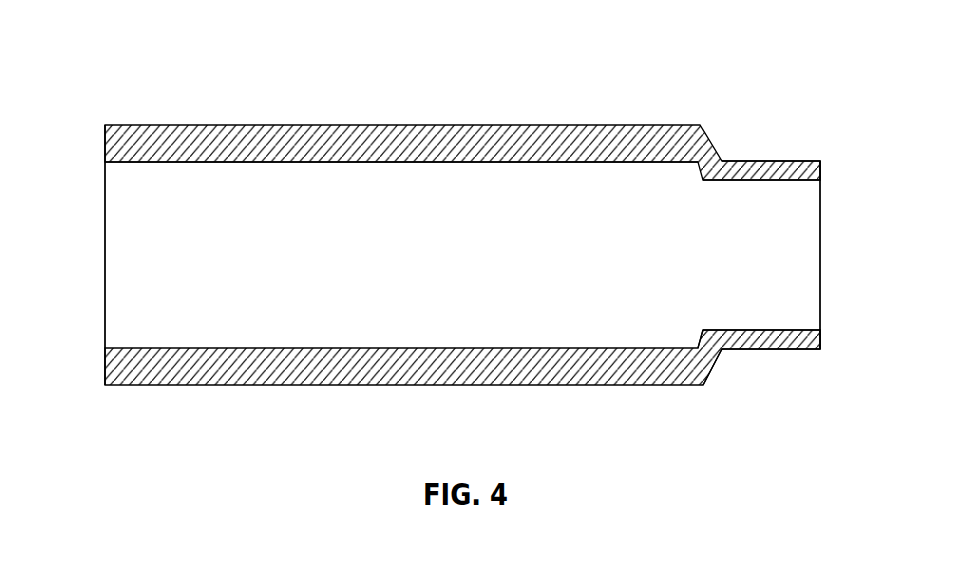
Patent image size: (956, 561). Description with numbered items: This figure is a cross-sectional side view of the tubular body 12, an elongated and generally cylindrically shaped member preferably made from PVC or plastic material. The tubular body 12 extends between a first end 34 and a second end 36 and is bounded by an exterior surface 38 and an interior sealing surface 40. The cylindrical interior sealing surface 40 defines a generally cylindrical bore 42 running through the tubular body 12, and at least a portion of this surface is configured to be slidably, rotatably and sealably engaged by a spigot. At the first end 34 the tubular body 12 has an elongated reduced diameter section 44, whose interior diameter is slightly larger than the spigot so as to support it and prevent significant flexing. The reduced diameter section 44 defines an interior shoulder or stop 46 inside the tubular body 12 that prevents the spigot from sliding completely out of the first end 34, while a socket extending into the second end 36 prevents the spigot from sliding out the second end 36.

The tubular body 12 is at (440, 244).
The first end 34 is at (812, 366).
The second end 36 is at (112, 406).
The exterior surface 38 is at (430, 125).
The interior sealing surface 40 is at (460, 164).
The bore 42 is at (195, 253).
The reduced diameter section 44 is at (766, 152).
The interior shoulder or stop 46 is at (698, 338).